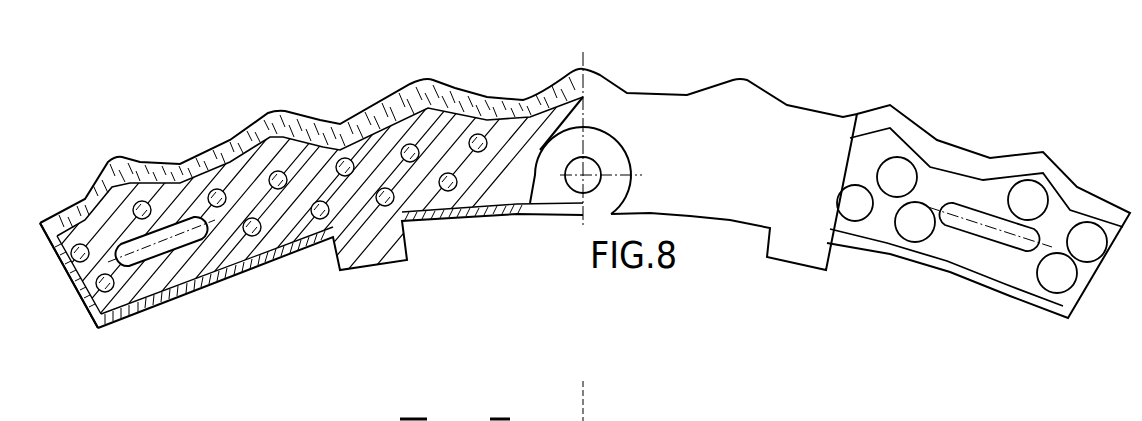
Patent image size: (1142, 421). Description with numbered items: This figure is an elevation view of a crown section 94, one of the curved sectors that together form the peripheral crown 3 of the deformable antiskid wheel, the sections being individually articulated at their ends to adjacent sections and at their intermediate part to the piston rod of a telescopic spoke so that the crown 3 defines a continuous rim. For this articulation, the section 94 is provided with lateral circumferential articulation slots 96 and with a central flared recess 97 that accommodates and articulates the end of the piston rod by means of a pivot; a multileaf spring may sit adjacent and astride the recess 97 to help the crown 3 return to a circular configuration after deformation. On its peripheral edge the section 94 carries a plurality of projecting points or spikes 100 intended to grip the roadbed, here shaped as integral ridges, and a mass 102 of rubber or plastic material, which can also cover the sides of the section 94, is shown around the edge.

The peripheral crown 3 is at (267, 262).
The crown section 94 is at (75, 290).
The lateral circumferential articulation slot 96 is at (158, 259).
The central flared recess 97 is at (533, 193).
The projecting points or spikes 100 is at (432, 118).
The mass of suitable material 102 is at (313, 132).